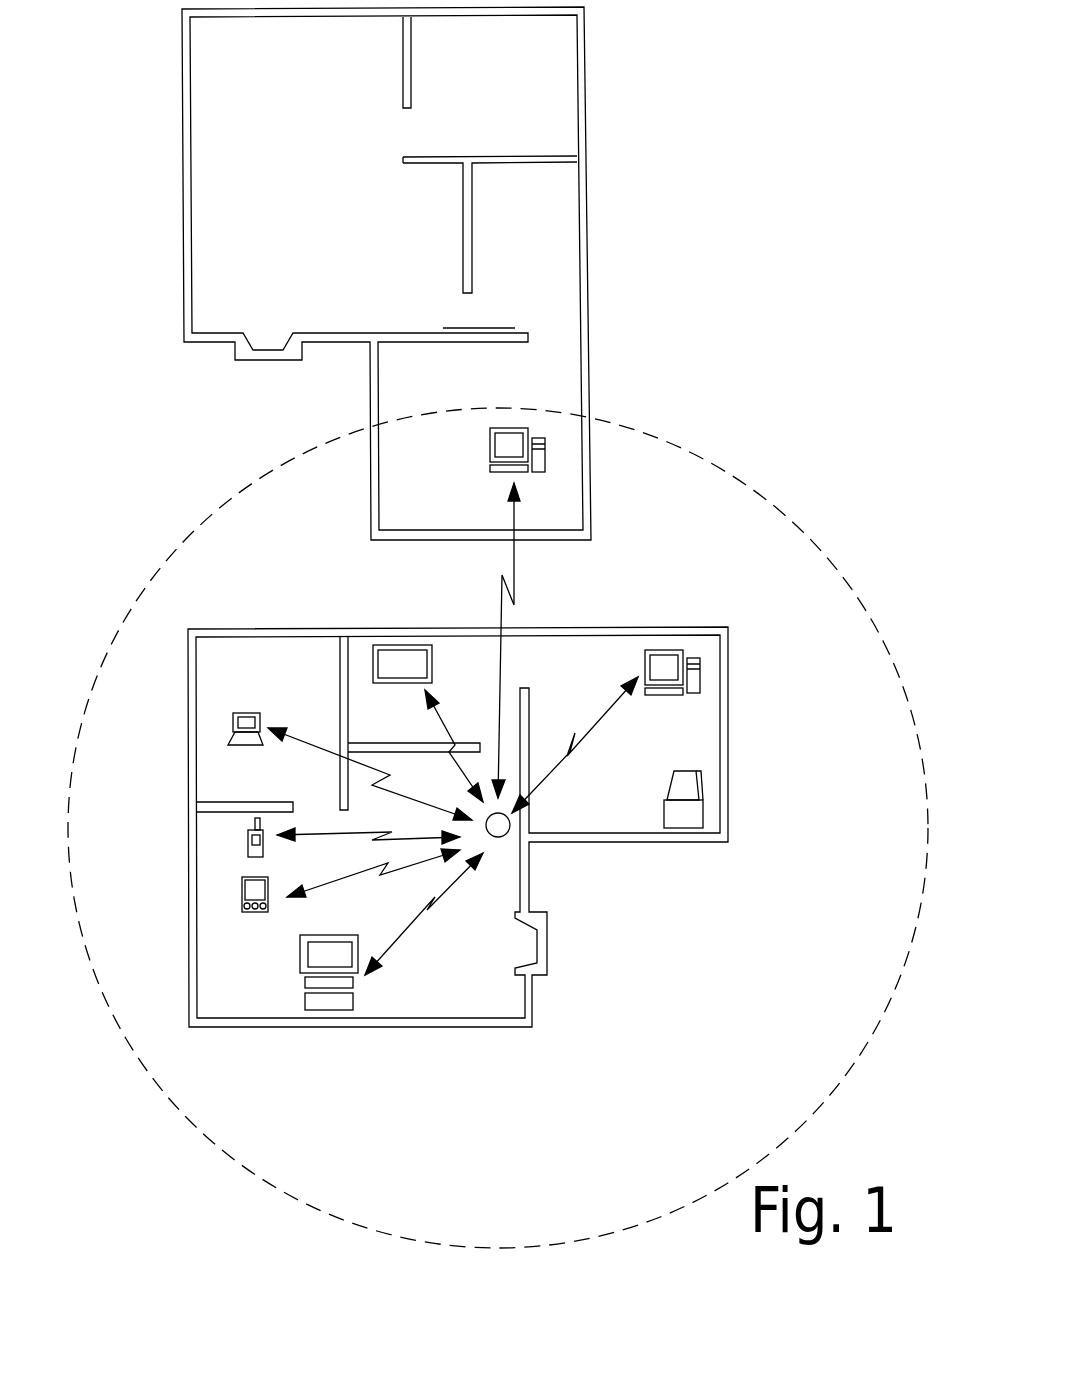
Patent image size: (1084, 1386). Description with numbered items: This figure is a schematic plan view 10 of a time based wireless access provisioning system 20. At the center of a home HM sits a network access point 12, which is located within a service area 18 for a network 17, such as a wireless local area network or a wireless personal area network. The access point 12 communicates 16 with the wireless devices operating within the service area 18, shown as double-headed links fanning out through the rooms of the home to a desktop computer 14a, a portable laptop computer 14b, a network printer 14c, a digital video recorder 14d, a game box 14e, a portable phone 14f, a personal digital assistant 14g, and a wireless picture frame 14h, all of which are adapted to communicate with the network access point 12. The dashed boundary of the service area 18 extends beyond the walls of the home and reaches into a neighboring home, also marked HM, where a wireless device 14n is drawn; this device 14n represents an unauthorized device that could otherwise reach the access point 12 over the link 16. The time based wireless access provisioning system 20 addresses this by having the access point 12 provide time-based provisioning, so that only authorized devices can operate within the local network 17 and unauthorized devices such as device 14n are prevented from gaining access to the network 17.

The schematic plan view 10 is at (783, 165).
The network access point 12 is at (498, 838).
The desktop computer 14a is at (667, 697).
The portable laptop computer 14b is at (243, 713).
The network printer 14c is at (703, 812).
The digital video recorder 14d is at (323, 1010).
The game box 14e is at (305, 983).
The portable phone 14f is at (248, 845).
The personal digital assistant 14g is at (243, 899).
The wireless picture frame 14h is at (394, 645).
The unauthorized wireless device 14n is at (545, 460).
The communication 16 is at (515, 577).
The network 17 is at (843, 803).
The service area 18 is at (757, 497).
The time based wireless access provisioning system 20 is at (697, 855).